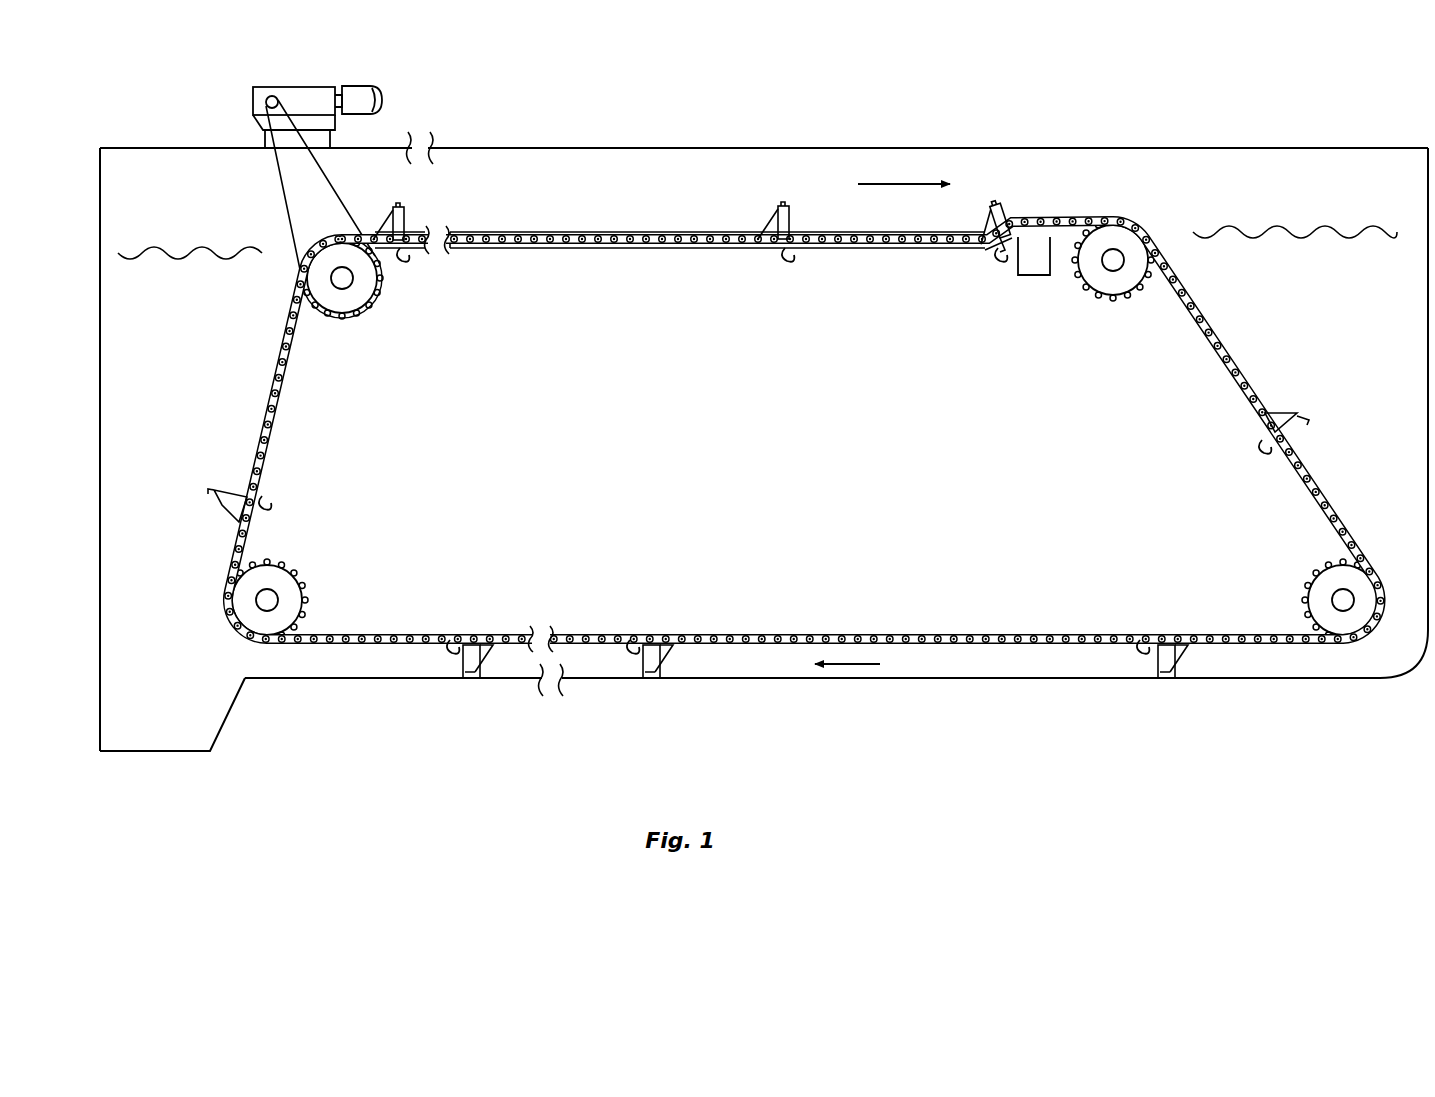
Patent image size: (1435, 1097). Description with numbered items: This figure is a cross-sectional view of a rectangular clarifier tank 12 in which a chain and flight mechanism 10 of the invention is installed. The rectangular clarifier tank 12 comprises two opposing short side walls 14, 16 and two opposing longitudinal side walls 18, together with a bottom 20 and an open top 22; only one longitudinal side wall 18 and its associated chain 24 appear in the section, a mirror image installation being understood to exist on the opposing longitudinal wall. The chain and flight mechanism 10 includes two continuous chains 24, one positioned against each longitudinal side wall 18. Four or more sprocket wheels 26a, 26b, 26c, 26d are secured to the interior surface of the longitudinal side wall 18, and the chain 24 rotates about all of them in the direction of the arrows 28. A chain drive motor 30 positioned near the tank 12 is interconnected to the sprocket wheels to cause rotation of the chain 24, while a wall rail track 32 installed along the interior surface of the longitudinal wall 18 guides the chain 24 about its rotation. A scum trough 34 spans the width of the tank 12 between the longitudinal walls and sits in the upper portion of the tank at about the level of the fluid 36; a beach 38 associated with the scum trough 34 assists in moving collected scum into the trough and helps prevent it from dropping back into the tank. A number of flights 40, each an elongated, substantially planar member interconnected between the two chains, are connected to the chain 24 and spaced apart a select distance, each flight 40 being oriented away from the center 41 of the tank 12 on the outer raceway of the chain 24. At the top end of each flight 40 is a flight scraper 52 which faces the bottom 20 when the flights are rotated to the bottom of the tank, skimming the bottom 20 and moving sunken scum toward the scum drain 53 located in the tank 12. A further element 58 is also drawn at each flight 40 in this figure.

The chain and flight mechanism 10 is at (784, 182).
The rectangular clarifier tank 12 is at (764, 429).
The short side wall 14 is at (104, 192).
The short side wall 16 is at (1424, 200).
The longitudinal side wall 18 is at (572, 180).
The bottom 20 is at (1003, 680).
The open top 22 is at (997, 138).
The continuous chain 24 is at (640, 250).
The sprocket wheel 26a is at (360, 295).
The sprocket wheel 26b is at (1100, 275).
The sprocket wheel 26c is at (1325, 595).
The sprocket wheel 26d is at (298, 590).
The arrows 28 is at (882, 417).
The chain drive motor 30 is at (372, 88).
The wall rail track 32 is at (890, 250).
The scum trough 34 is at (1035, 278).
The fluid 36 is at (192, 250).
The beach 38 is at (1010, 252).
The flight 40 is at (398, 215).
The center 41 is at (777, 450).
The flight scraper 52 is at (465, 677).
The scum drain 53 is at (163, 725).
The flight hook 58 is at (405, 256).